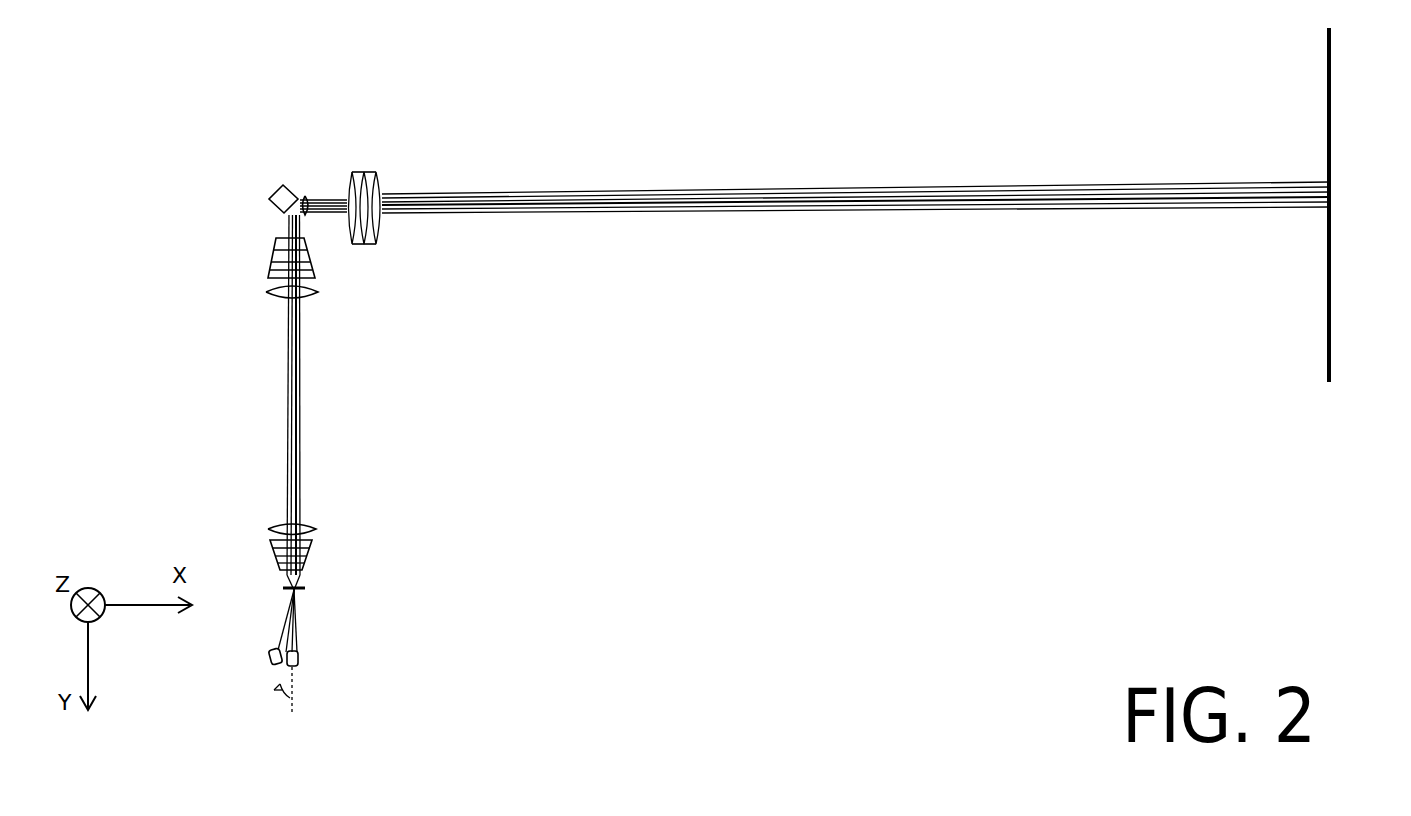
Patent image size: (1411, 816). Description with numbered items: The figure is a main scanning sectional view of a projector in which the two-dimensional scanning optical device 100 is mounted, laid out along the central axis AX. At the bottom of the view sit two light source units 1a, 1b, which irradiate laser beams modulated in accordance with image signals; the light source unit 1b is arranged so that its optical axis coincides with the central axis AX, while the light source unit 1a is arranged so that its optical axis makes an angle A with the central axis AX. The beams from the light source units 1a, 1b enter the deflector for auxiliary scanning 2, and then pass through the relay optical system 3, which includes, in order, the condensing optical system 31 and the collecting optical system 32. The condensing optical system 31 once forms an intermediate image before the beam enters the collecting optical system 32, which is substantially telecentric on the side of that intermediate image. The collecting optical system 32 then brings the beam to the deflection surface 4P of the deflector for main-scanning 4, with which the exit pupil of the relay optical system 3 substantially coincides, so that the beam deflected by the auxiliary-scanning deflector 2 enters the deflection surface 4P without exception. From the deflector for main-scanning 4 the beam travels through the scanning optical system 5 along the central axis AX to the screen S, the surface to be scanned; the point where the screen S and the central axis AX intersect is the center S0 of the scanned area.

The two-dimensional scanning optical device 100 is at (838, 390).
The relay optical system 3 is at (228, 370).
The screen S is at (1331, 320).
The center of the scanned area S0 is at (1331, 196).
The central axis AX is at (650, 212).
The deflector for main-scanning 4 is at (277, 191).
The deflection surface of the deflector for main-scanning 4P is at (303, 203).
The scanning optical system 5 is at (382, 258).
The collecting optical system 32 is at (252, 232).
The condensing optical system 31 is at (260, 518).
The deflector for auxiliary scanning 2 is at (298, 584).
The light source unit 1a is at (270, 656).
The light source unit 1b is at (299, 660).
The angle A is at (290, 698).